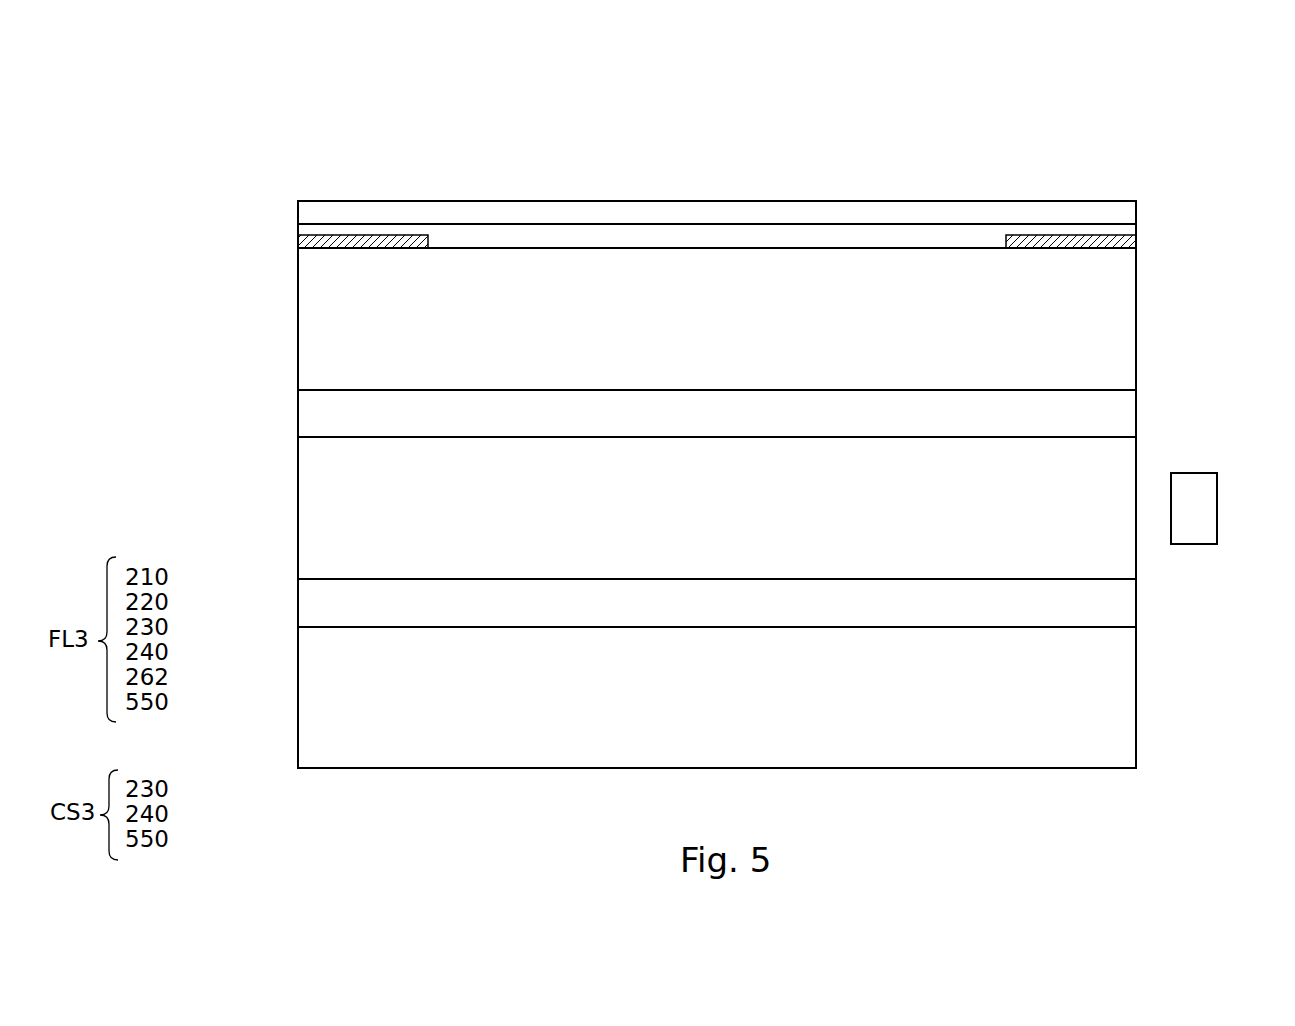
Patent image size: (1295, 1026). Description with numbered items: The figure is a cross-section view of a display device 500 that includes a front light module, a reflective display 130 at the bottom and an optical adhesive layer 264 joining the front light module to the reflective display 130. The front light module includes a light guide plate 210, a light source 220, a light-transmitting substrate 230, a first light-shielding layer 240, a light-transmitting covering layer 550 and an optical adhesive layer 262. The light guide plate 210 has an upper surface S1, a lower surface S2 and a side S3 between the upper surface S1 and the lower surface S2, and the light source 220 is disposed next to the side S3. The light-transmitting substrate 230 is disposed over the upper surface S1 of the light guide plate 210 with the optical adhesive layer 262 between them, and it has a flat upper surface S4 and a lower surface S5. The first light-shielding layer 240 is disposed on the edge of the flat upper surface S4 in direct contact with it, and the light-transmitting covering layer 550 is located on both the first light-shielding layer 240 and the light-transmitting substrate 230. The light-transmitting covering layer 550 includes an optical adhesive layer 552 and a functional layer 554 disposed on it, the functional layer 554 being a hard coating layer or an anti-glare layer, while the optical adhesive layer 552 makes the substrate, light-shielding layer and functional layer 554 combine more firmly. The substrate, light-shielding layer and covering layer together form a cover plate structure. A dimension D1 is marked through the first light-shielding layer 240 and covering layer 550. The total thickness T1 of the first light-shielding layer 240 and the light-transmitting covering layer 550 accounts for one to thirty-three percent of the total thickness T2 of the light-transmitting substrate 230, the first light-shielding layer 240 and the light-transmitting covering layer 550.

The display device 500 is at (231, 53).
The reflective display 130 is at (299, 698).
The optical adhesive layer 264 is at (299, 603).
The light guide plate 210 is at (299, 503).
The optical adhesive layer 262 is at (301, 417).
The light-transmitting substrate 230 is at (299, 318).
The first light-shielding layer 240 is at (299, 243).
The light-transmitting covering layer 550 is at (638, 158).
The optical adhesive layer 552 is at (548, 233).
The functional layer 554 is at (611, 213).
The light source 220 is at (1207, 508).
The upper surface S1 is at (407, 437).
The lower surface S2 is at (367, 579).
The side S3 is at (1137, 450).
The flat upper surface S4 is at (442, 248).
The lower surface S5 is at (453, 390).
The distance D1 is at (372, 257).
The total thickness T1 is at (1216, 202).
The total thickness T2 is at (1137, 390).